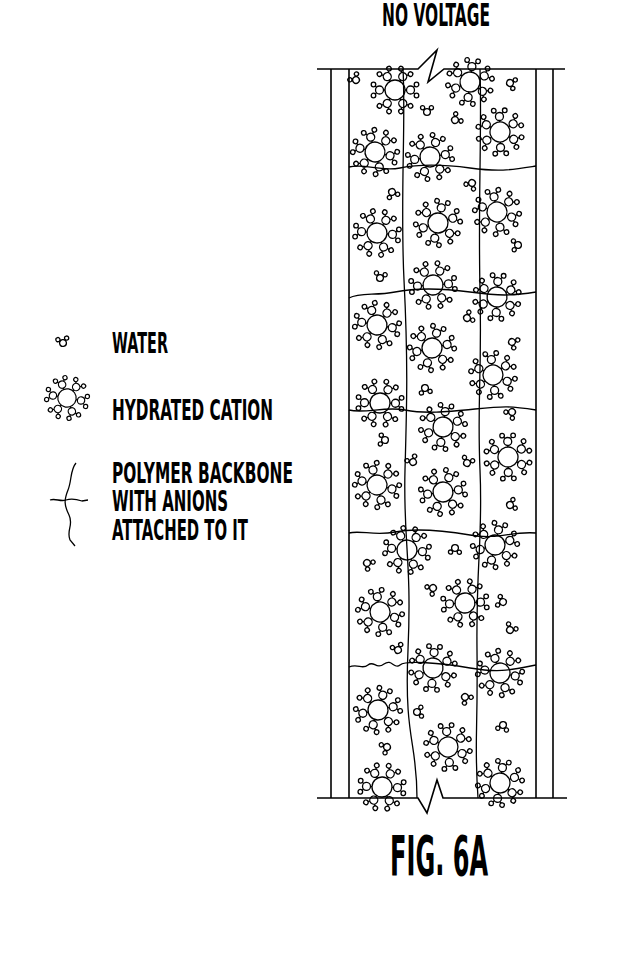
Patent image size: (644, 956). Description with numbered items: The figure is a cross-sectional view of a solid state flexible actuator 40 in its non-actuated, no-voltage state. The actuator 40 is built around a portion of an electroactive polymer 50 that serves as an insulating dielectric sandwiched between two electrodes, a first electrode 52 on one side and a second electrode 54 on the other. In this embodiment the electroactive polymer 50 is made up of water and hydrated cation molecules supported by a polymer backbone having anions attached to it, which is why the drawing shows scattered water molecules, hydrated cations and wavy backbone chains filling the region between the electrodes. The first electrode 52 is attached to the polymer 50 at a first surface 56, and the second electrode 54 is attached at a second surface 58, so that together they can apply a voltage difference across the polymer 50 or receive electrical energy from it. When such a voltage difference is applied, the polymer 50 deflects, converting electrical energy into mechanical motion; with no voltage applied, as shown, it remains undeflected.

The solid state flexible actuator 40 is at (205, 128).
The electroactive polymer 50 is at (470, 717).
The first electrode 52 is at (337, 640).
The second electrode 54 is at (536, 142).
The first surface 56 is at (357, 197).
The second surface 58 is at (526, 267).